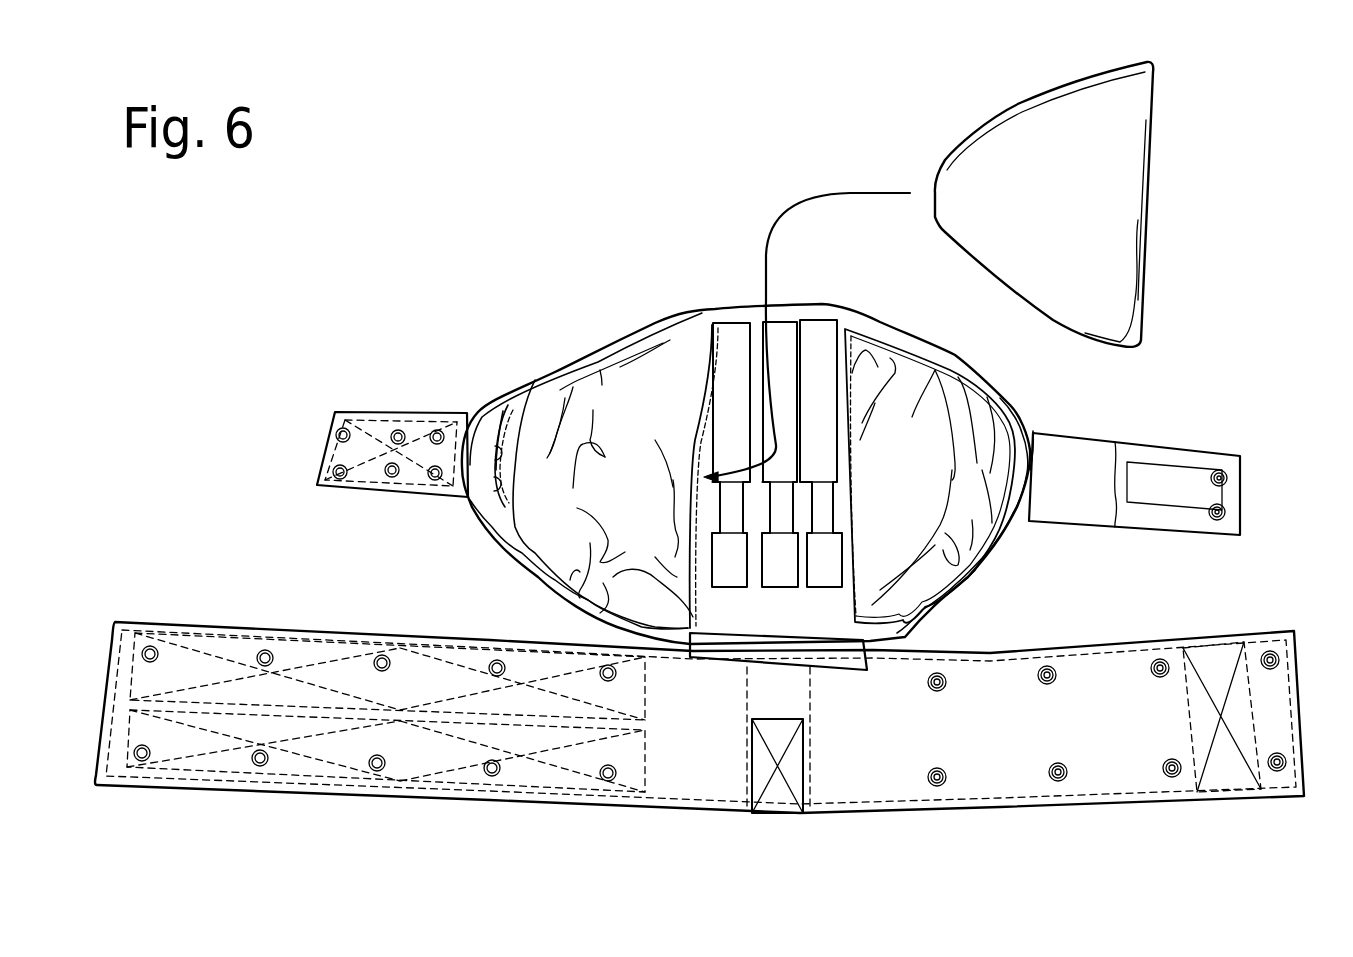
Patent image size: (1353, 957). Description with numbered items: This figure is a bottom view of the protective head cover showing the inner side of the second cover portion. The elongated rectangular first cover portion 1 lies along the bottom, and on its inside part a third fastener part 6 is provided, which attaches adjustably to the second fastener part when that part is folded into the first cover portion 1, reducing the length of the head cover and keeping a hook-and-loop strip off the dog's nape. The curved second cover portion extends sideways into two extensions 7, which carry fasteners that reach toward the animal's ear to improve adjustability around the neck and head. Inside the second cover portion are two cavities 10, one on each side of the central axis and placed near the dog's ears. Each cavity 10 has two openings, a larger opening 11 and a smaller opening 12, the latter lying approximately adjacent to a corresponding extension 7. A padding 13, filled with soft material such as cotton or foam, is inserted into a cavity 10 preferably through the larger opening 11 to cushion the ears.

The first cover portion 1 is at (873, 762).
The third fastener part 6 is at (787, 772).
The extensions 7 is at (417, 453).
The cavities 10 is at (625, 423).
The larger opening 11 is at (718, 402).
The smaller opening 12 is at (500, 412).
The padding 13 is at (1098, 165).